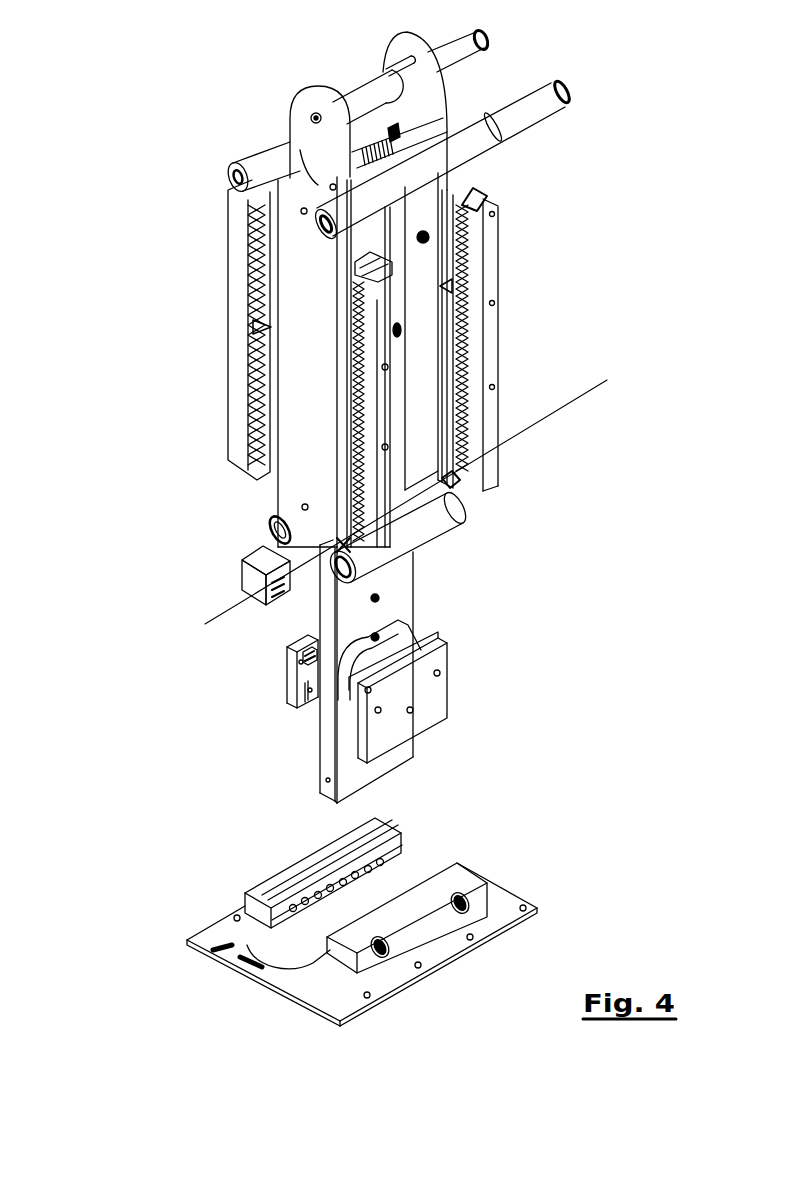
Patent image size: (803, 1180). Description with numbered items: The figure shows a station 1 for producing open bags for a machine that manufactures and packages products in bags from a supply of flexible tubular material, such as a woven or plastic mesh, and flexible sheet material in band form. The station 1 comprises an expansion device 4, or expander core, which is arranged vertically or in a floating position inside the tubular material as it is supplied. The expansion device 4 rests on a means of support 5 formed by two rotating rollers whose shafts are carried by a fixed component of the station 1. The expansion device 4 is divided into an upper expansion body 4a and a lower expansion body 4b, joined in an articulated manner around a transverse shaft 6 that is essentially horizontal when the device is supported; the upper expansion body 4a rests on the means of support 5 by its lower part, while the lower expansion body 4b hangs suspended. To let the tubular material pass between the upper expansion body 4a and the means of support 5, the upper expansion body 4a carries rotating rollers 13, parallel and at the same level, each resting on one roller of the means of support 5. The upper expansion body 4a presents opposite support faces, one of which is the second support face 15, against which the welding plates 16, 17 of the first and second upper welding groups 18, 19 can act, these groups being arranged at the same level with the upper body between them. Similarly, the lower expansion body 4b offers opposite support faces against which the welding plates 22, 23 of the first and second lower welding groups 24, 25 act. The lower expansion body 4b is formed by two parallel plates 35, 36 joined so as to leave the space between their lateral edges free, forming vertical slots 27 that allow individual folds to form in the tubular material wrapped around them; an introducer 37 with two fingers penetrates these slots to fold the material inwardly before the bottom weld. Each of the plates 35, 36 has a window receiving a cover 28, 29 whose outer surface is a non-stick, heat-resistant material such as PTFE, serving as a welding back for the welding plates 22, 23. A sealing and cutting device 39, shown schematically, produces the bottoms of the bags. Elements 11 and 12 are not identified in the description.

The station 1 is at (172, 214).
The expansion device 4 is at (212, 452).
The upper expansion body 4a is at (298, 366).
The lower expansion body 4b is at (323, 753).
The means of support 5 is at (265, 520).
The transverse shaft 6 is at (585, 402).
The slide plate 11 is at (292, 284).
The guide plate 12 is at (434, 285).
The rotating rollers 13 is at (450, 483).
The second support face 15 is at (428, 234).
The welding plate 16 is at (271, 331).
The welding plate 17 is at (453, 285).
The first upper welding group 18 is at (237, 298).
The second upper welding group 19 is at (490, 287).
The welding plate 22 is at (305, 707).
The welding plate 23 is at (429, 658).
The first lower welding group 24 is at (290, 697).
The second lower welding group 25 is at (433, 700).
The vertical slots 27 is at (328, 767).
The cover 28 is at (317, 673).
The cover 29 is at (403, 640).
The plate 35 is at (318, 615).
The plate 36 is at (400, 603).
The introducer 37 is at (253, 572).
The sealing and cutting device 39 is at (242, 915).